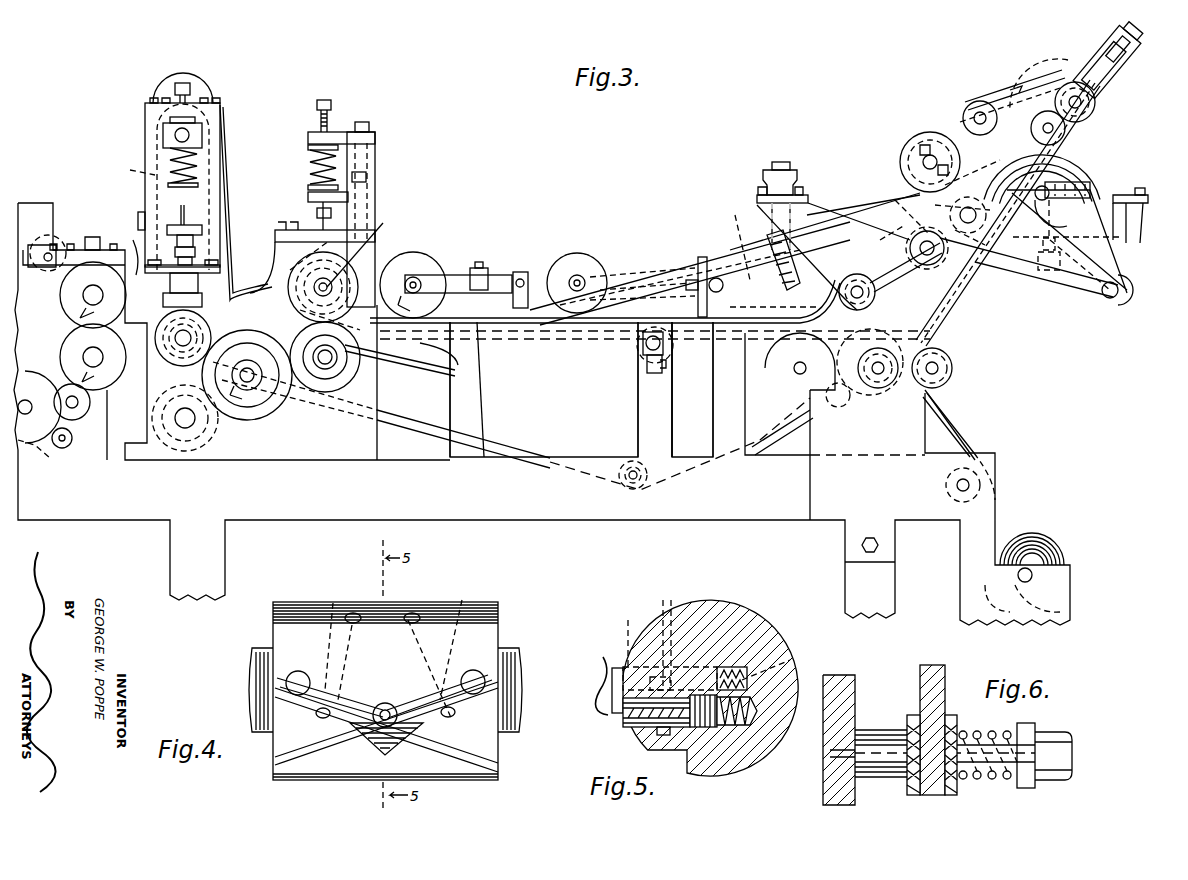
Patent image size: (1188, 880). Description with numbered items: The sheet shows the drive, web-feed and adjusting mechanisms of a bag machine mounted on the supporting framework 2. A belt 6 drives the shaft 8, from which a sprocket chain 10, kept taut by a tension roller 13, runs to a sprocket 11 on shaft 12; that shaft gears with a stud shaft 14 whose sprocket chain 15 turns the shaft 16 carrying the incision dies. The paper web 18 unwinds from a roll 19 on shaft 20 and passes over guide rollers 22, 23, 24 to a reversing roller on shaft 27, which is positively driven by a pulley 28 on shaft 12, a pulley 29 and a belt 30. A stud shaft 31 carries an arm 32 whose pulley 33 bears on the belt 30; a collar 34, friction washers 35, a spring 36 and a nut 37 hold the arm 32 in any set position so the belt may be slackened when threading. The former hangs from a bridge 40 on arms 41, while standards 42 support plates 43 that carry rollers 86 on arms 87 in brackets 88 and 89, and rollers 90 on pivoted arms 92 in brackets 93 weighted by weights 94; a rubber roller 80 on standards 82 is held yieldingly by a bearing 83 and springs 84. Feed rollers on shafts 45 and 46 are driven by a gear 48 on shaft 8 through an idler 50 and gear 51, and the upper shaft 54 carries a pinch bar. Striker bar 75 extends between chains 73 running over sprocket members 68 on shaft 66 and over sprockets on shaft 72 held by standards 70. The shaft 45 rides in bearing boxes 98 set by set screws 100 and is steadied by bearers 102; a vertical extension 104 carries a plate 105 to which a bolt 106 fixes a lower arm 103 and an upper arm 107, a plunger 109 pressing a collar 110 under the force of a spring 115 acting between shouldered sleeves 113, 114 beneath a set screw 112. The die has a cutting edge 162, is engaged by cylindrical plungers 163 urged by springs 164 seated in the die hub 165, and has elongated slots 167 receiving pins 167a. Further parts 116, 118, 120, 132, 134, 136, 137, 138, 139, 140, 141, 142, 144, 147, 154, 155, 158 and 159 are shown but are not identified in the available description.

In FIG. 3, the supporting framework 2 is at (590, 516).
In FIG. 6, the supporting framework 2 is at (855, 688).
In FIG. 3, the belt 6 is at (838, 354).
In FIG. 3, the shaft 8 is at (178, 345).
In FIG. 3, the sprocket chain 10 is at (247, 295).
In FIG. 3, the sprocket 11 is at (930, 338).
In FIG. 3, the shaft 12 is at (945, 390).
In FIG. 3, the tension roller 13 is at (650, 482).
In FIG. 3, the stud shaft 14 is at (875, 358).
In FIG. 3, the sprocket chain 15 is at (1025, 80).
In FIG. 3, the shaft 16 is at (1085, 97).
In FIG. 4, the shaft 16 is at (250, 688).
In FIG. 3, the web 18 is at (985, 440).
In FIG. 3, the roll 19 is at (1058, 550).
In FIG. 3, the shaft 20 is at (1068, 585).
In FIG. 3, the guide roller 22 is at (985, 503).
In FIG. 3, the guide roller 23 is at (955, 365).
In FIG. 3, the guide roller 24 is at (1029, 247).
In FIG. 3, the shaft 27 is at (984, 192).
In FIG. 3, the pulley 28 is at (880, 390).
In FIG. 3, the pulley 29 is at (1066, 125).
In FIG. 3, the belt 30 is at (1020, 95).
In FIG. 3, the stud shaft 31 is at (860, 274).
In FIG. 6, the stud shaft 31 is at (858, 735).
In FIG. 3, the arm 32 is at (912, 240).
In FIG. 6, the arm 32 is at (932, 665).
In FIG. 3, the pulley 33 is at (925, 240).
In FIG. 6, the collar 34 is at (880, 730).
In FIG. 3, the friction washers 35 is at (800, 298).
In FIG. 6, the friction washers 35 is at (913, 715).
In FIG. 6, the spring 36 is at (990, 730).
In FIG. 6, the nut 37 is at (1026, 723).
In FIG. 3, the bridge 40 is at (805, 200).
In FIG. 3, the arms 41 is at (820, 210).
In FIG. 3, the standards 42 is at (478, 395).
In FIG. 3, the plates 43 is at (548, 330).
In FIG. 3, the shaft 45 is at (375, 250).
In FIG. 3, the shaft 46 is at (325, 365).
In FIG. 3, the gear 48 is at (163, 345).
In FIG. 3, the idler 50 is at (244, 410).
In FIG. 3, the gear 51 is at (395, 370).
In FIG. 3, the upper shaft 54 is at (183, 305).
In FIG. 3, the shaft 66 is at (185, 428).
In FIG. 3, the sprocket members 68 is at (150, 450).
In FIG. 3, the standards 70 is at (222, 112).
In FIG. 3, the shaft 72 is at (190, 135).
In FIG. 3, the chains 73 is at (148, 175).
In FIG. 3, the striker bar 75 is at (140, 222).
In FIG. 3, the soft rubber roller 80 is at (643, 350).
In FIG. 3, the standards 82 is at (636, 408).
In FIG. 3, the bearing 83 is at (648, 365).
In FIG. 3, the springs 84 is at (663, 366).
In FIG. 3, the rollers 86 is at (585, 258).
In FIG. 3, the arms 87 is at (638, 272).
In FIG. 3, the brackets 88 is at (700, 260).
In FIG. 3, the bracket 89 is at (716, 277).
In FIG. 3, the rollers 90 is at (420, 265).
In FIG. 3, the pivoted arms 92 is at (458, 275).
In FIG. 3, the brackets 93 is at (530, 282).
In FIG. 3, the weights 94 is at (486, 266).
In FIG. 3, the bearing boxes 98 is at (365, 245).
In FIG. 3, the set screws 100 is at (305, 232).
In FIG. 3, the bearers 102 is at (452, 389).
In FIG. 3, the lower arm 103 is at (308, 198).
In FIG. 3, the vertical extension of side frames 104 is at (376, 135).
In FIG. 3, the horizontal plate 105 is at (370, 183).
In FIG. 3, the bolt 106 is at (368, 120).
In FIG. 3, the upper arm 107 is at (343, 130).
In FIG. 3, the plunger 109 is at (317, 214).
In FIG. 3, the collar 110 is at (306, 285).
In FIG. 3, the set screw 112 is at (327, 98).
In FIG. 3, the shouldered sleeve 113 is at (308, 146).
In FIG. 3, the second shouldered sleeve 114 is at (308, 186).
In FIG. 3, the spring 115 is at (310, 160).
In FIG. 3, the sprocket 116 is at (395, 265).
In FIG. 3, the bracket 118 is at (203, 230).
In FIG. 3, the bolt 120 is at (175, 220).
In FIG. 3, the guide 132 is at (725, 250).
In FIG. 3, the guide 134 is at (1062, 165).
In FIG. 3, the guide 136 is at (1085, 170).
In FIG. 3, the wheel 137 is at (915, 147).
In FIG. 3, the bracket 138 is at (1130, 243).
In FIG. 3, the plate 139 is at (1067, 241).
In FIG. 3, the pivot 140 is at (1110, 300).
In FIG. 3, the arm 141 is at (1070, 290).
In FIG. 3, the bolt 142 is at (1048, 272).
In FIG. 3, the pin 144 is at (1070, 223).
In FIG. 3, the block 147 is at (1090, 185).
In FIG. 3, the bracket 154 is at (1122, 195).
In FIG. 3, the bolt 155 is at (1140, 188).
In FIG. 3, the belt 158 is at (970, 98).
In FIG. 3, the pulley 159 is at (966, 118).
In FIG. 4, the cutting edge 162 is at (390, 703).
In FIG. 5, the cutting edge 162 is at (639, 683).
In FIG. 4, the cylindrical plungers 163 is at (290, 676).
In FIG. 5, the cylindrical plungers 163 is at (712, 660).
In FIG. 4, the springs 164 is at (298, 671).
In FIG. 5, the springs 164 is at (780, 628).
In FIG. 4, the die hub 165 is at (490, 608).
In FIG. 5, the die hub 165 is at (745, 610).
In FIG. 5, the elongated slots 167 is at (628, 660).
In FIG. 4, the pins 167a is at (500, 580).
In FIG. 5, the pins 167a is at (665, 660).